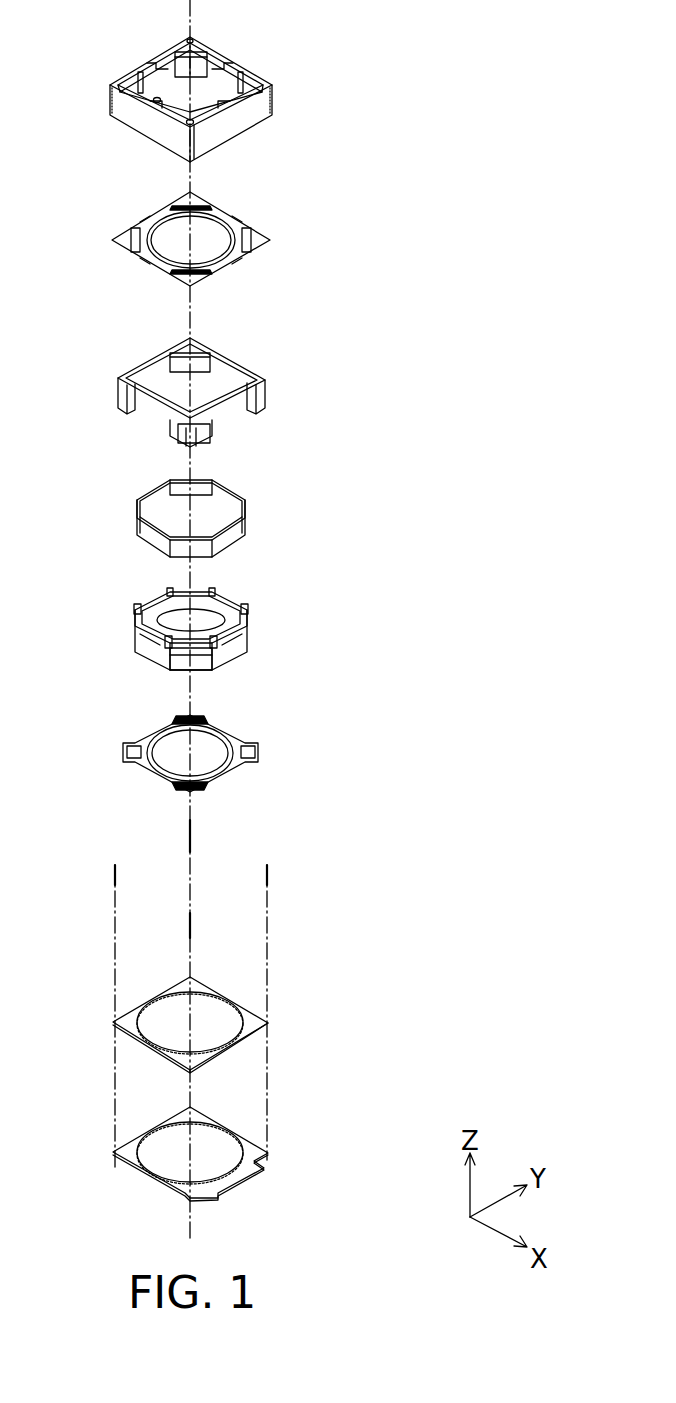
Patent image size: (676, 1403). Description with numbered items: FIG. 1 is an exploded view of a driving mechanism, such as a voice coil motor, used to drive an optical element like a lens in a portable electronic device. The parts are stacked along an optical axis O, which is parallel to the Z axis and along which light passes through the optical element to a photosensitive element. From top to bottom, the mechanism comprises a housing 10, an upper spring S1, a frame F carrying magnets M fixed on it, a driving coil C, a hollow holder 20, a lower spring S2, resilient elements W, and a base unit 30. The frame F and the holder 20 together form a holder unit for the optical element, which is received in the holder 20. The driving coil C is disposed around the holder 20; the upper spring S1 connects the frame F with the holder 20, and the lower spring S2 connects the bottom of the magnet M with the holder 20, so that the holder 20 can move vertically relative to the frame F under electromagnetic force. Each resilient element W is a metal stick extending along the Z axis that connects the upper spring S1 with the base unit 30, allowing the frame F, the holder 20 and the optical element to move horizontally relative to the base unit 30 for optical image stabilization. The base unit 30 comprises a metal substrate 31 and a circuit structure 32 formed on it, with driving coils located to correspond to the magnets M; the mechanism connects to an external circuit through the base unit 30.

The optical axis O is at (192, 7).
The housing 10 is at (278, 100).
The upper spring S1 is at (280, 240).
The frame F is at (278, 389).
The magnet M is at (202, 362).
The driving coil C is at (257, 513).
The holder 20 is at (257, 627).
The lower spring S2 is at (267, 752).
The resilient element W is at (190, 837).
The base unit 30 is at (272, 1089).
The metal substrate 31 is at (246, 1154).
The circuit structure 32 is at (278, 1023).